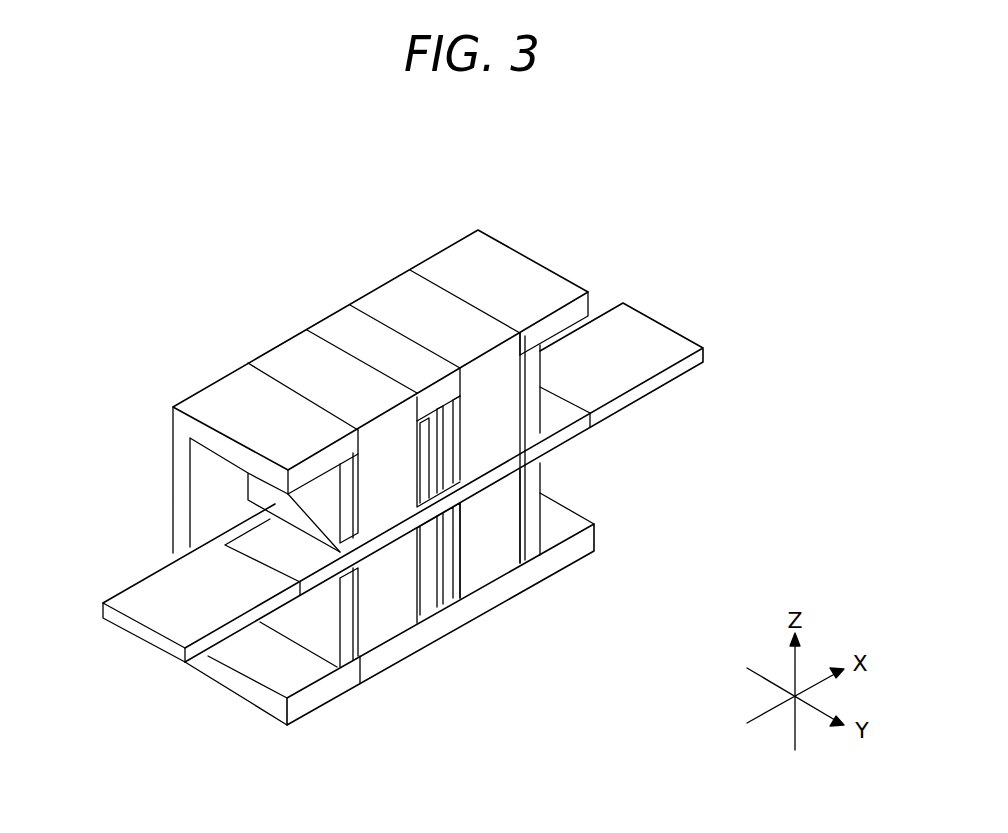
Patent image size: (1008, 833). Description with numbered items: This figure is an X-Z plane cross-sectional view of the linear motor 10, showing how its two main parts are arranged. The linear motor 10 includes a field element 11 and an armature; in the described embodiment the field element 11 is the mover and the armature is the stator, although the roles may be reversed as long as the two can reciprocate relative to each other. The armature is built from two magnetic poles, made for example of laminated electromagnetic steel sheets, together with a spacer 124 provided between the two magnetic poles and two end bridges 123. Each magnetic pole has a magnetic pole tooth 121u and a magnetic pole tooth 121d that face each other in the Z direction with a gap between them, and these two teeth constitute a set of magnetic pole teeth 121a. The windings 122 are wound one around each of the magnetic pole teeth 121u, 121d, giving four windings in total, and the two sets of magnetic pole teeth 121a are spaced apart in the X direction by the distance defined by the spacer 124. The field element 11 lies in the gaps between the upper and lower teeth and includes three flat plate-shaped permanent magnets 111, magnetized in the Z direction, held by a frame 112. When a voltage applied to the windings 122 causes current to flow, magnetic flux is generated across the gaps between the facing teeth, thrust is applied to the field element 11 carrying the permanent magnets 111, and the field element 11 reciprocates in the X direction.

The linear motor 10 is at (552, 231).
The field element 11 is at (380, 489).
The permanent magnet 111 is at (262, 538).
The frame 112 is at (165, 590).
The set of magnetic pole teeth 121a is at (558, 471).
The magnetic pole tooth 121u is at (450, 317).
The magnetic pole tooth 121d is at (545, 408).
The winding 122 is at (418, 423).
The end bridge 123 is at (465, 255).
The spacer 124 is at (413, 395).